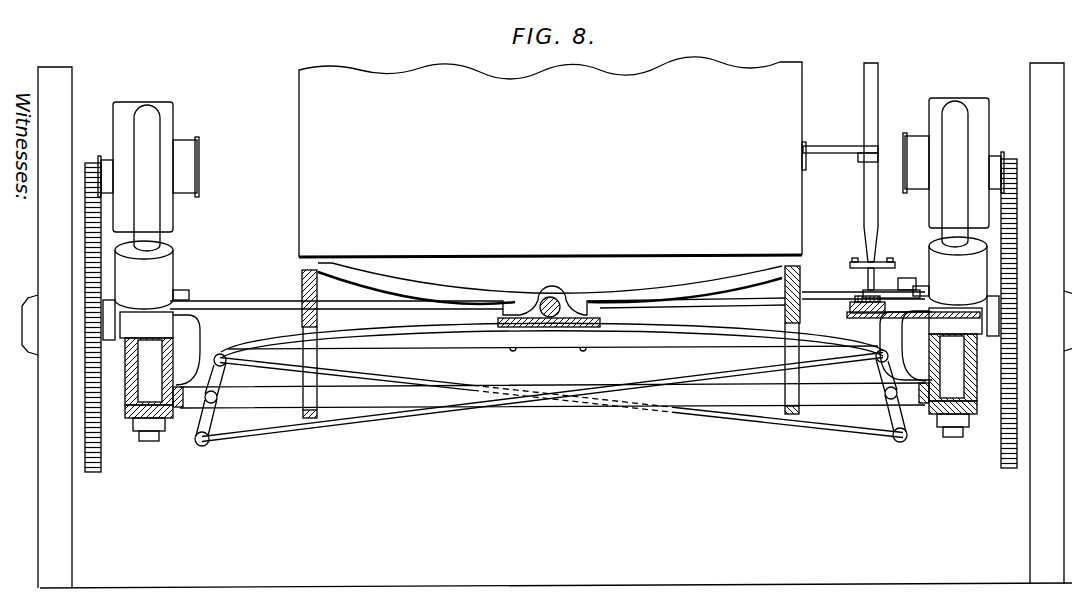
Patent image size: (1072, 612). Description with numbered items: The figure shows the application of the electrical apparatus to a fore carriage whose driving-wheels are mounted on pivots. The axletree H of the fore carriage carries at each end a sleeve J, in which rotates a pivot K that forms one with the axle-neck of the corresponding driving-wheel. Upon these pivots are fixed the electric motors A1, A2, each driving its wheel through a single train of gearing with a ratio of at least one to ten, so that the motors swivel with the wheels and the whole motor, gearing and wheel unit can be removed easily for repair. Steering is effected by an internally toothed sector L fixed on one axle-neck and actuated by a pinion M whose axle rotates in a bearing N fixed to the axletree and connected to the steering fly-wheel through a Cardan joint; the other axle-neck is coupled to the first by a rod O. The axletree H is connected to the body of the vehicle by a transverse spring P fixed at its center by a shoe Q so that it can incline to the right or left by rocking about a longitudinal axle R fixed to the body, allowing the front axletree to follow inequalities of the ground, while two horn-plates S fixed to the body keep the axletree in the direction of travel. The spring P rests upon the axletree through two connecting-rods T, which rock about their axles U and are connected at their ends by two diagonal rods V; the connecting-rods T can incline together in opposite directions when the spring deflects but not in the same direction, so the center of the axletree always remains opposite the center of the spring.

The electric motor A1 is at (950, 201).
The electric motor A2 is at (149, 205).
The axletree H is at (552, 395).
The sleeve J is at (126, 392).
The pivot K is at (551, 369).
The sector L is at (850, 317).
The pinion M is at (906, 346).
The bearing N is at (868, 317).
The rod O is at (547, 292).
The transverse spring P is at (632, 340).
The shoe Q is at (571, 302).
The longitudinal axle R is at (548, 298).
The horn-plate S is at (300, 327).
The connecting-rod T is at (212, 369).
The axle U is at (197, 412).
The diagonal rod V is at (552, 383).